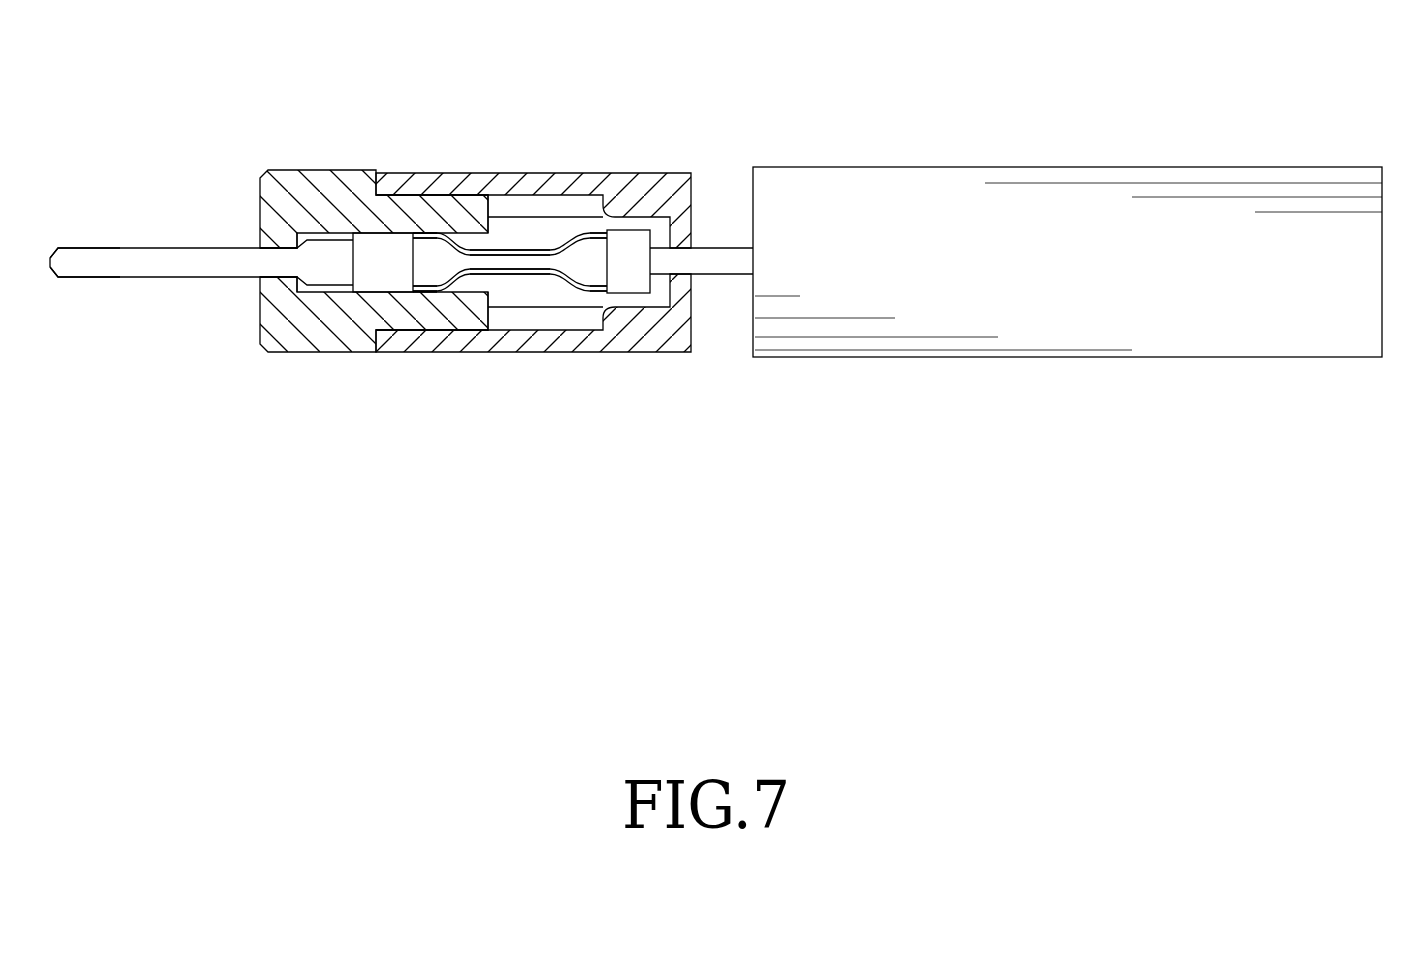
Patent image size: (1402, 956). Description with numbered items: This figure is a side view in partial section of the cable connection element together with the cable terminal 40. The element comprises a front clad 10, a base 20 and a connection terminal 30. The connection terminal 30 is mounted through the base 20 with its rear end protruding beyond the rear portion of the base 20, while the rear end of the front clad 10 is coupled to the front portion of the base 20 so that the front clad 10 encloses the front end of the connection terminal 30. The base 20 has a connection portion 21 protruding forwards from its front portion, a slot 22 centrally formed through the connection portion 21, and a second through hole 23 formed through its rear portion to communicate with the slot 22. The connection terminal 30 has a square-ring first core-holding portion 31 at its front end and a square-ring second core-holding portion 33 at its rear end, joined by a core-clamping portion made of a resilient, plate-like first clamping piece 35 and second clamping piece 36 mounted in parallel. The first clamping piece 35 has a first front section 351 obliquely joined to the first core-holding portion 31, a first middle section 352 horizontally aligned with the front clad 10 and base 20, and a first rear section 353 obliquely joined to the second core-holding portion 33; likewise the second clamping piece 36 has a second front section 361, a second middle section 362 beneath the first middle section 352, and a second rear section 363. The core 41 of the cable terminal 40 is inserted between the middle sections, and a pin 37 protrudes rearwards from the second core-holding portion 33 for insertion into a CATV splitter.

The front clad 10 is at (672, 173).
The base 20 is at (321, 257).
The connection portion 21 is at (386, 323).
The slot 22 is at (472, 237).
The second through hole 23 is at (253, 278).
The connection terminal 30 is at (375, 263).
The first core-holding portion 31 is at (632, 283).
The second core-holding portion 33 is at (367, 283).
The first clamping piece 35 is at (524, 146).
The first front section 351 is at (593, 233).
The first middle section 352 is at (513, 250).
The first rear section 353 is at (436, 233).
The second clamping piece 36 is at (518, 379).
The second front section 361 is at (593, 283).
The second middle section 362 is at (500, 273).
The second rear section 363 is at (433, 293).
The pin 37 is at (110, 278).
The cable terminal 40 is at (1016, 285).
The core 41 is at (728, 255).